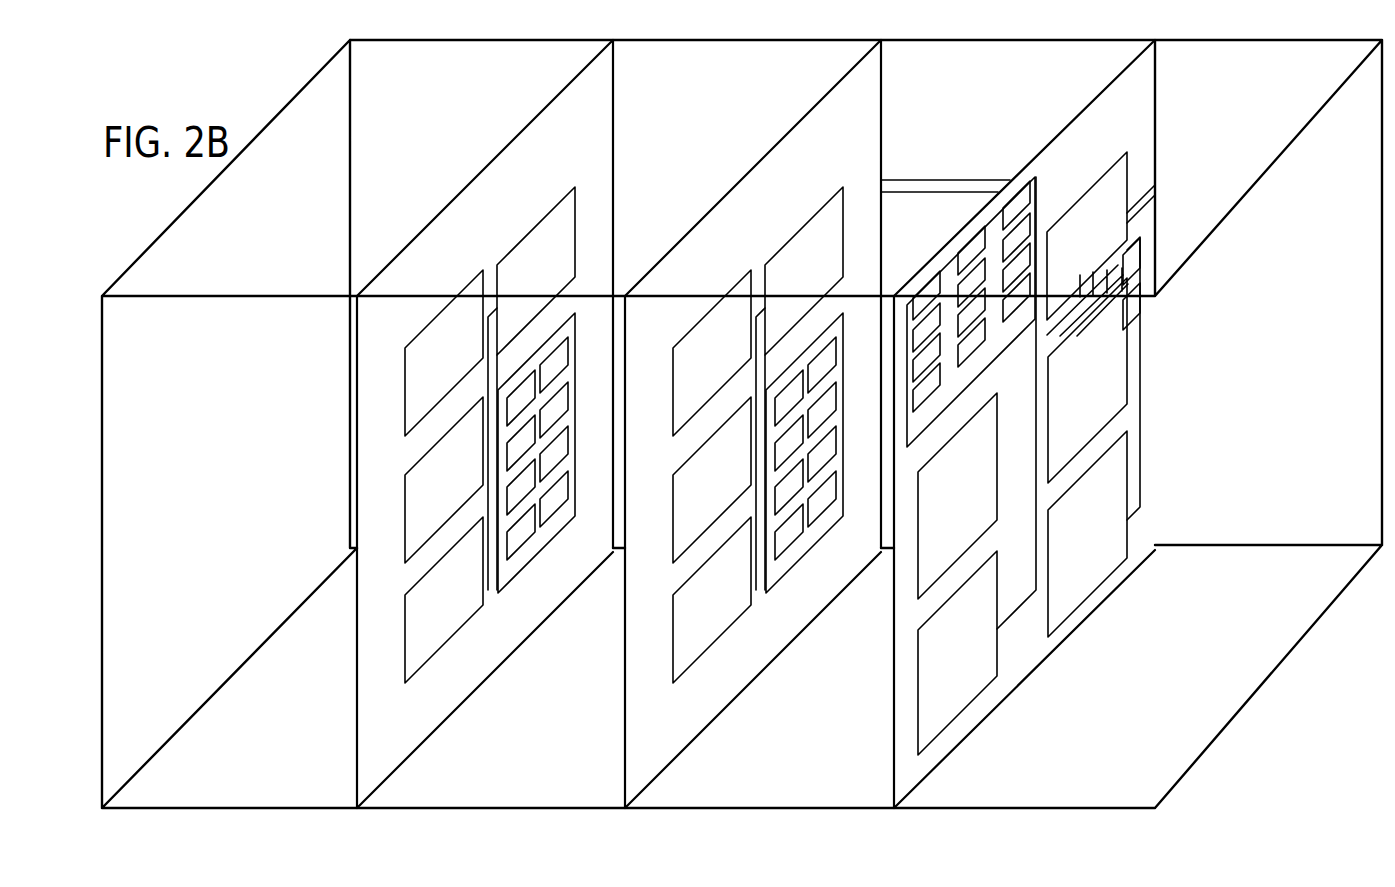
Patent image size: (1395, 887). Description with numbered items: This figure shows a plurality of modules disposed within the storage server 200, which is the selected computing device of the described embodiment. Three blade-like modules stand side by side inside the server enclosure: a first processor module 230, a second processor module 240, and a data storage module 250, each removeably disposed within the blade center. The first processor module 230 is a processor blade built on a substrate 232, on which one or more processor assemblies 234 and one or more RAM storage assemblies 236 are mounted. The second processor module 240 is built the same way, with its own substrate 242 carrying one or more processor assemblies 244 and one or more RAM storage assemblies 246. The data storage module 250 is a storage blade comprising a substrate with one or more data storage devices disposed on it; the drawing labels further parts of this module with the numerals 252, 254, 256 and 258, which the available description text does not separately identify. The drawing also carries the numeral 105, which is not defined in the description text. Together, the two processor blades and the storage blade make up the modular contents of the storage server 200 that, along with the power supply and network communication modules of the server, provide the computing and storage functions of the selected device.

The computing system enclosure 105 is at (287, 100).
The storage server 200 is at (1281, 704).
The first processor module 230 is at (410, 762).
The substrate 232 is at (498, 239).
The processor assemblies 234 is at (551, 289).
The RAM storage assemblies 236 is at (542, 554).
The second processor module 240 is at (678, 762).
The substrate 242 is at (766, 239).
The processor assemblies 244 is at (819, 289).
The RAM storage assemblies 246 is at (810, 554).
The data storage module 250 is at (948, 762).
The third circuit board 252 is at (1102, 163).
The third memory modules 254 is at (1098, 403).
The component board 256 is at (1102, 245).
The connector array 258 is at (1040, 176).